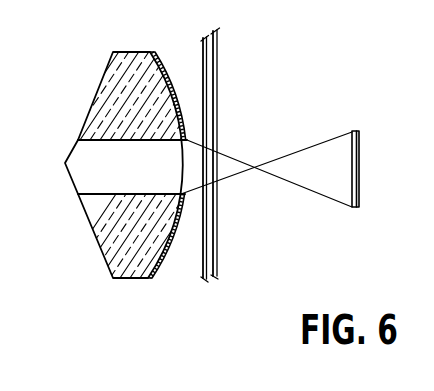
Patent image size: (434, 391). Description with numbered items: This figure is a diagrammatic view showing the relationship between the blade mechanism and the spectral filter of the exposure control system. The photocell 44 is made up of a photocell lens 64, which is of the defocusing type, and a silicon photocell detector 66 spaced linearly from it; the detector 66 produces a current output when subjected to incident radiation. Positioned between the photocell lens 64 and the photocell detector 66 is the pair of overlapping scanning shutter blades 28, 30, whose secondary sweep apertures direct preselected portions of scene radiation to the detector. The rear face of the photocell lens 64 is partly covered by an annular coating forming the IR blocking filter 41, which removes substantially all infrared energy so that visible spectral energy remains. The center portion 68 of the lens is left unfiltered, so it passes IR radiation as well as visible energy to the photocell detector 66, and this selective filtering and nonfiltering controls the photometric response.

The photocell 44 is at (96, 65).
The IR blocking filter 41 is at (158, 64).
The photocell lens 64 is at (100, 98).
The center portion 68 is at (88, 138).
The shutter blade element 30 is at (201, 278).
The shutter blade element 28 is at (212, 277).
The silicon photocell detector 66 is at (361, 166).